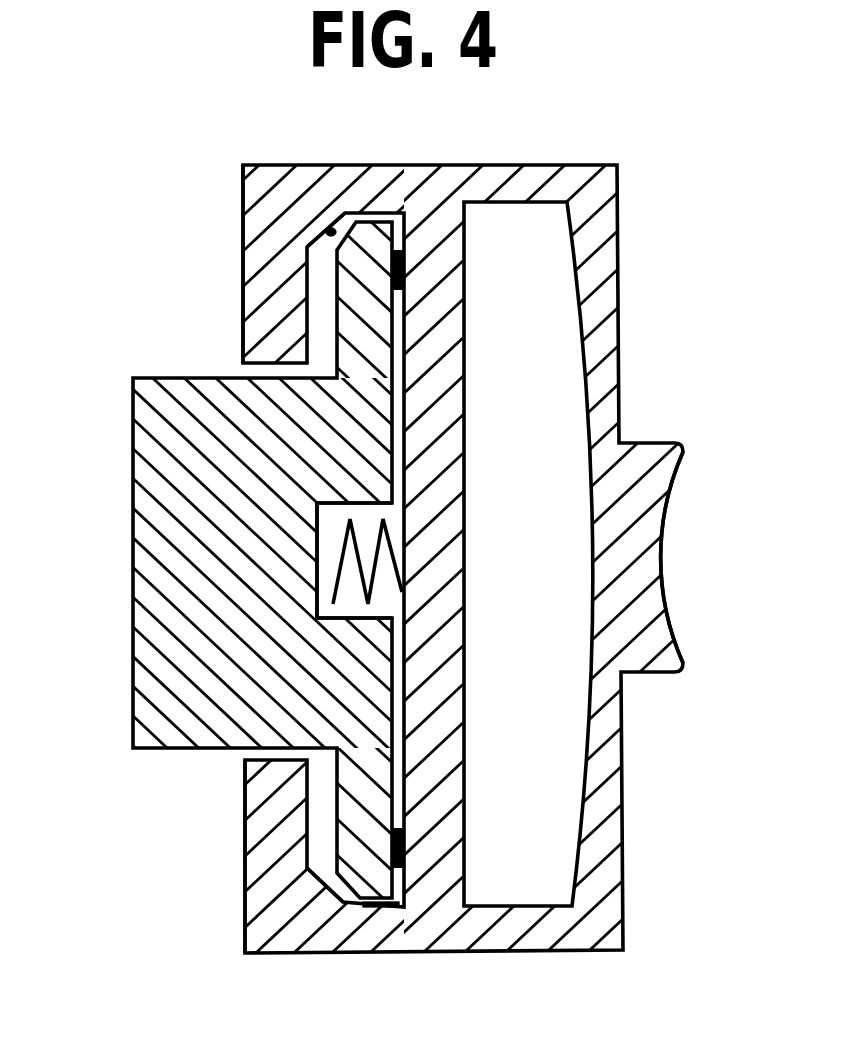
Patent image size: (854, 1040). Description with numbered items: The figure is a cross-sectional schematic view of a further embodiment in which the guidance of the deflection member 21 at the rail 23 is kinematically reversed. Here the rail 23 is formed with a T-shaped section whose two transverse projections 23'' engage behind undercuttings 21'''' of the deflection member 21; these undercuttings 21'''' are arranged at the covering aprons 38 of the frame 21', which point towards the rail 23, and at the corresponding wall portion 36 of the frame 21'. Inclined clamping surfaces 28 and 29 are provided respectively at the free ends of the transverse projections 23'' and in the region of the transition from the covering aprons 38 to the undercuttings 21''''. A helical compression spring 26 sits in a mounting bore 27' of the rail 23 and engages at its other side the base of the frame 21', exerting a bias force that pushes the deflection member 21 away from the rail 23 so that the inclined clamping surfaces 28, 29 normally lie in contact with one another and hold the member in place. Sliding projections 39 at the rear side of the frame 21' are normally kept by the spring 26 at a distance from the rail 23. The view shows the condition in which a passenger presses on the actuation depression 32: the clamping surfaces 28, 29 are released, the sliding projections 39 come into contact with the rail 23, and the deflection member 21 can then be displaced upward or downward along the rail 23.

The deflection member 21 is at (664, 346).
The frame 21' is at (427, 520).
The undercuttings 21'''' is at (209, 559).
The rail 23 is at (157, 543).
The transverse projections 23'' is at (427, 520).
The helical compression spring 26 is at (405, 568).
The mounting bore 27' is at (428, 541).
The inclined clamping surface 28 is at (350, 213).
The inclined clamping surface 29 is at (322, 236).
The actuation depression 32 is at (650, 557).
The upper housing wall 36 is at (275, 195).
The covering aprons 38 is at (302, 922).
The sliding projections 39 is at (403, 262).